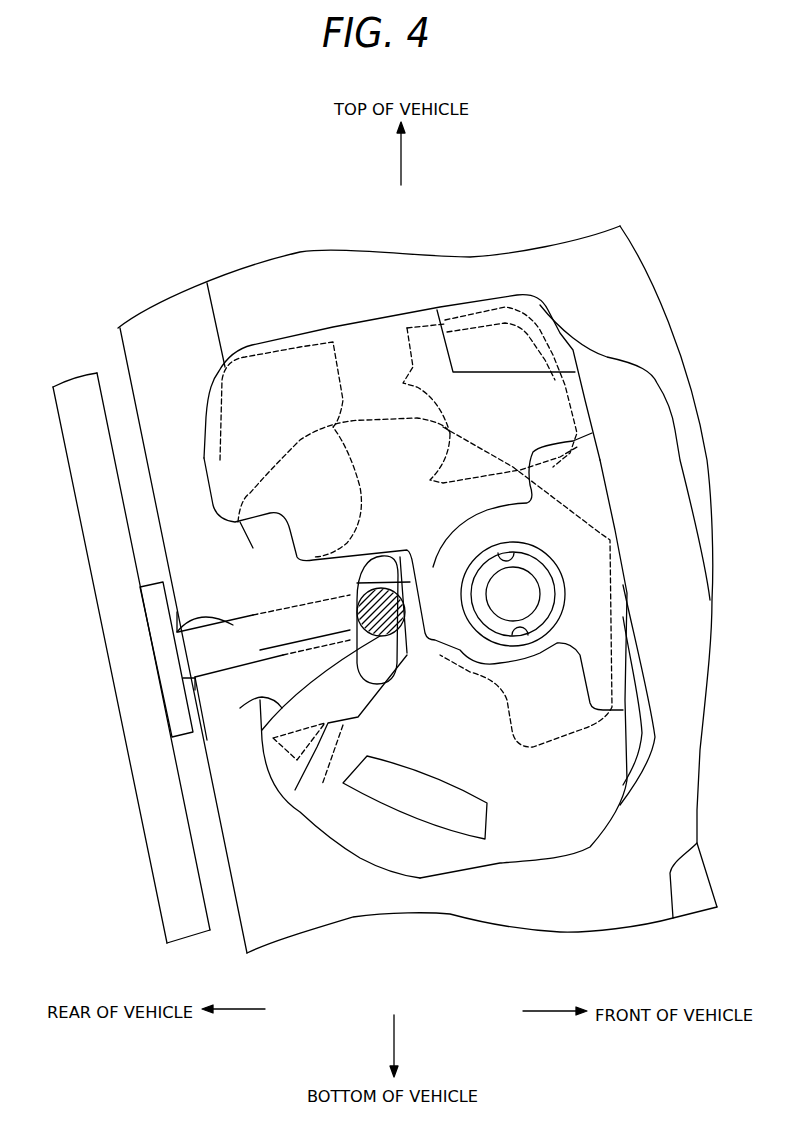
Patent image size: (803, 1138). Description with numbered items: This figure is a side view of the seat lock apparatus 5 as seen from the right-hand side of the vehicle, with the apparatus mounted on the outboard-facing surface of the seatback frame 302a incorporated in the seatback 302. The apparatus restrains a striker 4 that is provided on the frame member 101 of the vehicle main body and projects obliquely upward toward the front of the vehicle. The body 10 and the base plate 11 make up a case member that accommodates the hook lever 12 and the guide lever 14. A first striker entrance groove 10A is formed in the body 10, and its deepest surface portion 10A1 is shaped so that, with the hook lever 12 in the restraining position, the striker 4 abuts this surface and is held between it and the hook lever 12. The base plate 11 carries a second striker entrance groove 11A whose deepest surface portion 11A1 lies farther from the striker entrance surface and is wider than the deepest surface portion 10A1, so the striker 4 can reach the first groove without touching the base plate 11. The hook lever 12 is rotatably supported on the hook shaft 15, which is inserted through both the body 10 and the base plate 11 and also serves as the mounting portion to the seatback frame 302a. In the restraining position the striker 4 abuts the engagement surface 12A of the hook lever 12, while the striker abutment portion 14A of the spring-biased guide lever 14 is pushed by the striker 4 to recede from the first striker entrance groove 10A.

The seat lock apparatus 5 is at (371, 319).
The body 10 is at (638, 682).
The first striker entrance groove 10A is at (240, 708).
The deepest surface portion of the first striker entrance groove 10A1 is at (260, 650).
The base plate 11 is at (528, 835).
The second striker entrance groove 11A is at (253, 578).
The deepest surface portion of the second striker entrance groove 11A1 is at (357, 583).
The hook lever 12 is at (250, 550).
The engagement surface 12A is at (195, 677).
The guide lever 14 is at (423, 645).
The striker abutment portion 14A is at (262, 740).
The hook shaft 15 is at (565, 560).
The striker 4 is at (357, 618).
The frame member 101 is at (148, 851).
The seatback 302 is at (126, 347).
The seatback frame 302a is at (213, 312).